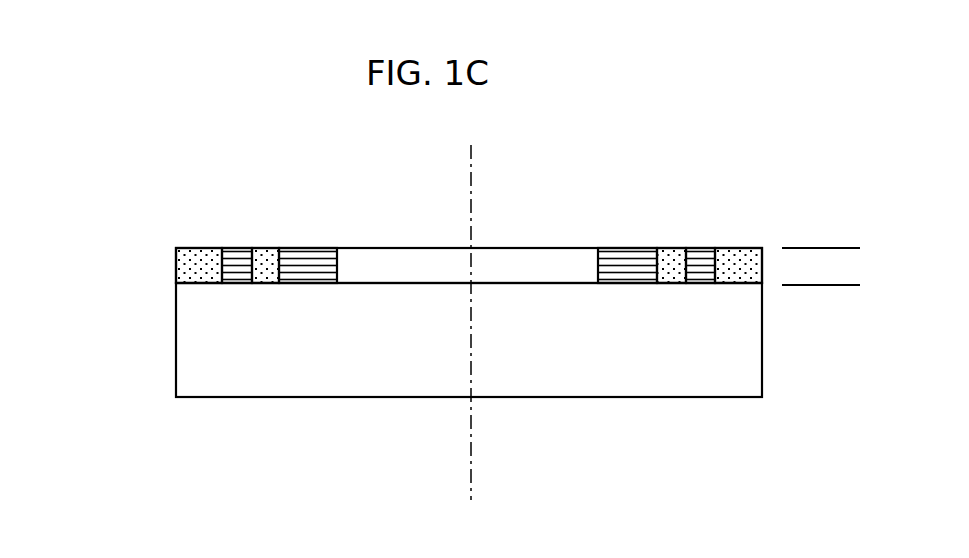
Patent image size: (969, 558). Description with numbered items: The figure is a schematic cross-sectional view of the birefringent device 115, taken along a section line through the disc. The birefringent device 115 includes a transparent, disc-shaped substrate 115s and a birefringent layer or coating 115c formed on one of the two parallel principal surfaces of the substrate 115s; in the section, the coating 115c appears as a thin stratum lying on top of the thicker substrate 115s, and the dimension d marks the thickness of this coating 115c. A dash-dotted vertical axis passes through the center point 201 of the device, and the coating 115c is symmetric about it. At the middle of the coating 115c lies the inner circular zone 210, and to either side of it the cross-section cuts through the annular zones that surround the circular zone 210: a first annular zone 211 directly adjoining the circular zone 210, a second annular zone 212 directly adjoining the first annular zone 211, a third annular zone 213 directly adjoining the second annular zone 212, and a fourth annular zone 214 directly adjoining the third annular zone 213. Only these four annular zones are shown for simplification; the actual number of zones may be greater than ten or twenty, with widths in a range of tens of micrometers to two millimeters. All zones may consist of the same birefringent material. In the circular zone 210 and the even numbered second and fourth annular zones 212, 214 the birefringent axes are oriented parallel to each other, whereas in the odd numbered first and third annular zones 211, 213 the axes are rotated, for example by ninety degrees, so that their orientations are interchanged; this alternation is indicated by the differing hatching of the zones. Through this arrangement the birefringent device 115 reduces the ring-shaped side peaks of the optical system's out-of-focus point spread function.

The birefringent device 115 is at (422, 321).
The birefringent layer or coating 115c is at (158, 249).
The substrate 115s is at (156, 289).
The center point 201 is at (470, 248).
The circular zone 210 is at (512, 248).
The first annular zone 211 is at (303, 285).
The second annular zone 212 is at (265, 248).
The third annular zone 213 is at (237, 285).
The fourth annular zone 214 is at (200, 248).
The thickness d is at (821, 210).